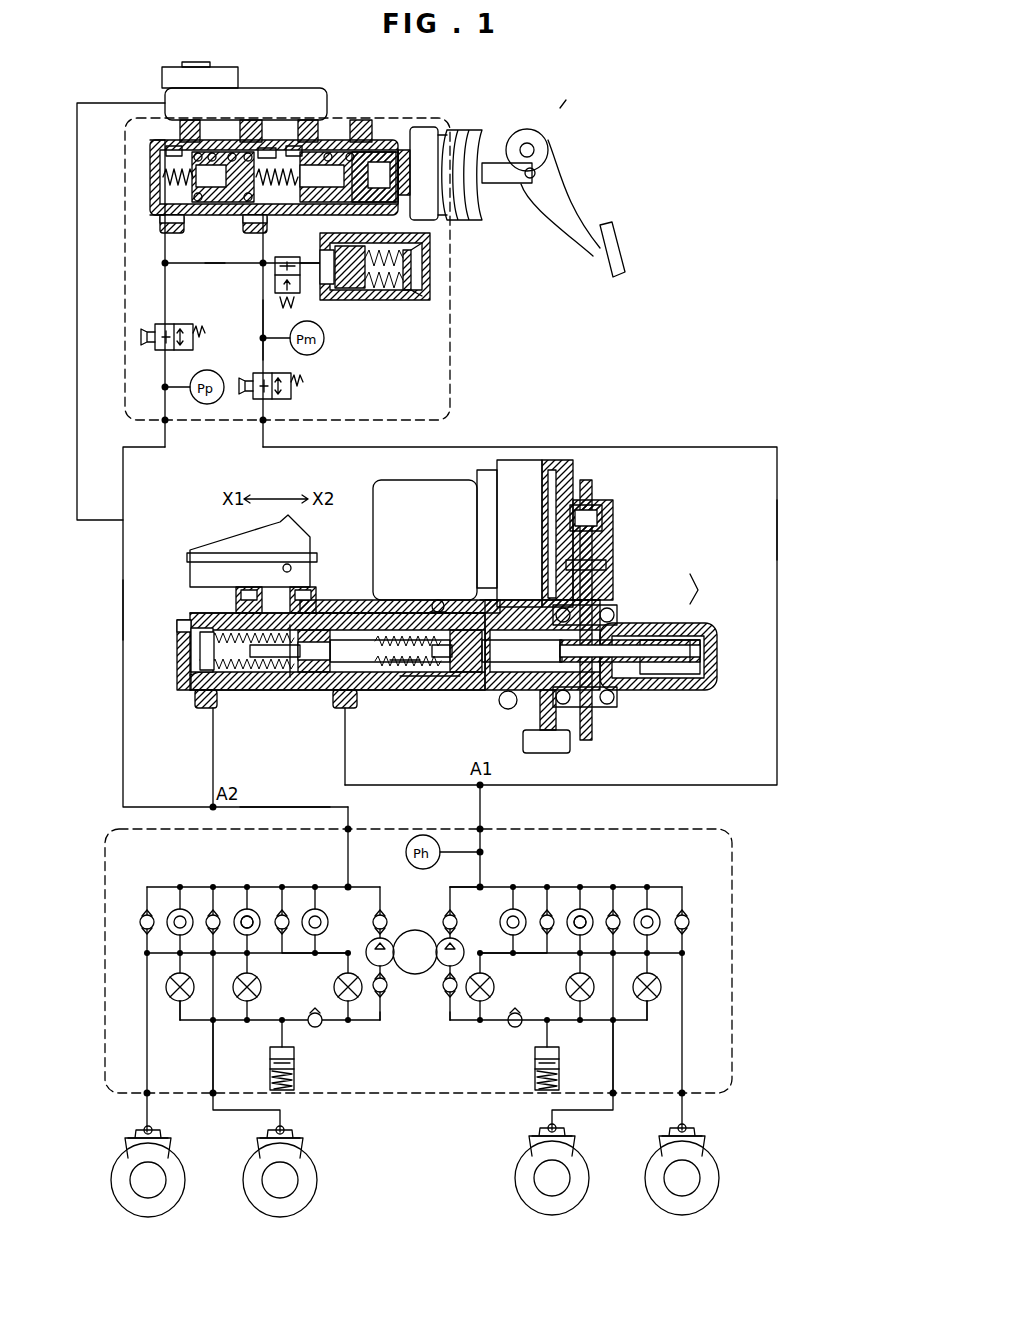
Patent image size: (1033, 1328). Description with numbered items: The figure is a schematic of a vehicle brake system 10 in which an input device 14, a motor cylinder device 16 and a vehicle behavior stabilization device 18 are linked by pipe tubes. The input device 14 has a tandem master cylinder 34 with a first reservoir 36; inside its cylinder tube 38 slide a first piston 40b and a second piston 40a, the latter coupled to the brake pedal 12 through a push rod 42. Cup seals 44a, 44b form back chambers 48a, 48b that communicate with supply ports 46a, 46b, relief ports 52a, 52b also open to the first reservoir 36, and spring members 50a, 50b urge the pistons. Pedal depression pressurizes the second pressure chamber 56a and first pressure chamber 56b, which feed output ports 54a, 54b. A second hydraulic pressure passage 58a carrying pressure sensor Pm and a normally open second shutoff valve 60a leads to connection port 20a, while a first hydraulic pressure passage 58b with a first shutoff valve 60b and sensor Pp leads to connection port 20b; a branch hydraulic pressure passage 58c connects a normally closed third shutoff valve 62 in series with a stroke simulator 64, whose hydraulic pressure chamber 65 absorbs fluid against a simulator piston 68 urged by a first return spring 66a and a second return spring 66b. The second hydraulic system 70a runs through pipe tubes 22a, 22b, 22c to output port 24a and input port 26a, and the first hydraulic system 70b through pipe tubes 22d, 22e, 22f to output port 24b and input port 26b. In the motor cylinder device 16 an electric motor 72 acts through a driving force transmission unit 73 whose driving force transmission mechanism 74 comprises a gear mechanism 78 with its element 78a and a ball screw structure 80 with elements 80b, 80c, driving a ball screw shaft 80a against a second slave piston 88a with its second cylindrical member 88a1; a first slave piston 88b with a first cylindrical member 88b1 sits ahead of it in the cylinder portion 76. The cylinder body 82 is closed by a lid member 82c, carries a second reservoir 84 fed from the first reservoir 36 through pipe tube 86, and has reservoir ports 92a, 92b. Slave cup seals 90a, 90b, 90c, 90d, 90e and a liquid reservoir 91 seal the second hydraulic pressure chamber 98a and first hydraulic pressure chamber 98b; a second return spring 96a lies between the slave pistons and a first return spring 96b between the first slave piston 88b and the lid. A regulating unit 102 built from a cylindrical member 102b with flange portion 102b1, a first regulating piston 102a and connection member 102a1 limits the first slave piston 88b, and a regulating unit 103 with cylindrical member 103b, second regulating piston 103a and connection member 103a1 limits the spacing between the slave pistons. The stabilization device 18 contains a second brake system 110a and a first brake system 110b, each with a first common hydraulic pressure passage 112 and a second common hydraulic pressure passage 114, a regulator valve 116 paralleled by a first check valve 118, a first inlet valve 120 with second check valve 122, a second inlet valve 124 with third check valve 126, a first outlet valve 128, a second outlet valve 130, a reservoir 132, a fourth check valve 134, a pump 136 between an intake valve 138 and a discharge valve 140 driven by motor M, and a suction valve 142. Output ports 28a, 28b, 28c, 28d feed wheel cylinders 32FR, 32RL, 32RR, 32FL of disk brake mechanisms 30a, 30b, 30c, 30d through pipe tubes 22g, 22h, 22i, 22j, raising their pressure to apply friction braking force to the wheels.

The vehicle brake system 10 is at (574, 104).
The brake pedal 12 is at (623, 243).
The input device 14 is at (450, 326).
The motor cylinder device 16 is at (620, 480).
The vehicle behavior stabilization device 18 is at (638, 820).
The connection port 20a is at (260, 430).
The connection port 20b is at (168, 440).
The first pipe tube 22a is at (777, 540).
The second pipe tube 22b is at (388, 783).
The third pipe tube 22c is at (480, 800).
The fourth pipe tube 22d is at (123, 608).
The fifth pipe tube 22e is at (213, 760).
The sixth pipe tube 22f is at (280, 805).
The seventh pipe tube 22g is at (684, 1125).
The eighth pipe tube 22h is at (552, 1120).
The ninth pipe tube 22i is at (282, 1120).
The tenth pipe tube 22j is at (145, 1125).
The output port 24a is at (350, 708).
The output port 24b is at (196, 706).
The input port 26a is at (484, 829).
The input port 26b is at (350, 829).
The first output port 28a is at (686, 1096).
The second output port 28b is at (616, 1096).
The third output port 28c is at (212, 1096).
The fourth output port 28d is at (145, 1095).
The disk brake mechanism 30a is at (726, 1205).
The disk brake mechanism 30b is at (596, 1207).
The disk brake mechanism 30c is at (326, 1209).
The disk brake mechanism 30d is at (194, 1209).
The wheel cylinder 32FL is at (170, 1158).
The wheel cylinder 32RR is at (302, 1158).
The wheel cylinder 32RL is at (575, 1157).
The wheel cylinder 32FR is at (704, 1157).
The tandem master cylinder 34 is at (356, 140).
The first reservoir 36 is at (248, 90).
The cylinder tube 38 is at (370, 152).
The second piston 40a is at (350, 152).
The first piston 40b is at (212, 152).
The push rod 42 is at (430, 150).
The cup seal 44a is at (248, 212).
The cup seal 44b is at (198, 212).
The supply port 46a is at (328, 152).
The supply port 46b is at (232, 152).
The back chamber 48a is at (362, 205).
The back chamber 48b is at (220, 205).
The spring member 50a is at (270, 152).
The spring member 50b is at (158, 135).
The relief port 52a is at (300, 142).
The relief port 52b is at (176, 142).
The output port 54a is at (268, 222).
The output port 54b is at (160, 222).
The second pressure chamber 56a is at (333, 177).
The first pressure chamber 56b is at (209, 177).
The second hydraulic pressure passage 58a is at (263, 338).
The first hydraulic pressure passage 58b is at (160, 285).
The branch hydraulic pressure passage 58c is at (212, 290).
The second shutoff valve 60a is at (290, 398).
The first shutoff valve 60b is at (176, 322).
The third shutoff valve 62 is at (294, 296).
The stroke simulator 64 is at (438, 250).
The hydraulic pressure chamber 65 is at (338, 300).
The first return spring 66a is at (415, 292).
The second return spring 66b is at (385, 292).
The simulator piston 68 is at (355, 292).
The second hydraulic system 70a is at (548, 436).
The first hydraulic system 70b is at (106, 661).
The electric motor 72 is at (405, 480).
The driving force transmission unit 73 is at (733, 675).
The driving force transmission mechanism 74 is at (697, 575).
The cylinder portion 76 is at (290, 690).
The gear mechanism 78 is at (590, 600).
The gear 78a is at (590, 505).
The ball screw structure 80 is at (685, 590).
The ball screw shaft 80a is at (680, 690).
The bearing 80b is at (628, 620).
The bearing 80c is at (630, 690).
The cylinder body 82 is at (370, 690).
The lid member 82c is at (180, 668).
The second reservoir 84 is at (190, 548).
The pipe tube 86 is at (77, 333).
The second slave piston 88a is at (470, 700).
The second cylindrical member 88a1 is at (545, 753).
The first slave piston 88b is at (315, 700).
The first cylindrical member 88b1 is at (305, 700).
The slave cup seal 90a is at (460, 690).
The slave cup seal 90b is at (448, 700).
The slave cup seal 90c is at (280, 690).
The slave cup seal 90d is at (255, 690).
The slave cup seal 90e is at (485, 612).
The liquid reservoir 91 is at (508, 712).
The reservoir port 92a is at (303, 588).
The reservoir port 92b is at (238, 597).
The second return spring 96a is at (395, 640).
The first return spring 96b is at (222, 640).
The second hydraulic pressure chamber 98a is at (398, 690).
The first hydraulic pressure chamber 98b is at (195, 683).
The regulating unit 102 is at (228, 700).
The first regulating piston 102a is at (225, 625).
The connection member 102a1 is at (292, 572).
The cylindrical member 102b is at (180, 645).
The flange portion 102b1 is at (185, 626).
The regulating unit 103 is at (415, 610).
The second regulating piston 103a is at (398, 610).
The connection member 103a1 is at (438, 600).
The cylindrical member 103b is at (418, 690).
The second brake system 110a is at (688, 874).
The first brake system 110b is at (152, 866).
The first common hydraulic pressure passage 112 is at (244, 880).
The second common hydraulic pressure passage 114 is at (222, 1025).
The regulator valve 116 is at (316, 905).
The first check valve 118 is at (282, 905).
The first inlet valve 120 is at (178, 905).
The second check valve 122 is at (142, 905).
The second inlet valve 124 is at (246, 895).
The third check valve 126 is at (212, 905).
The first outlet valve 128 is at (178, 1003).
The second outlet valve 130 is at (262, 985).
The reservoir 132 is at (296, 1075).
The fourth check valve 134 is at (318, 1030).
The pump 136 is at (445, 965).
The intake valve 138 is at (445, 990).
The discharge valve 140 is at (448, 918).
The suction valve 142 is at (360, 1015).